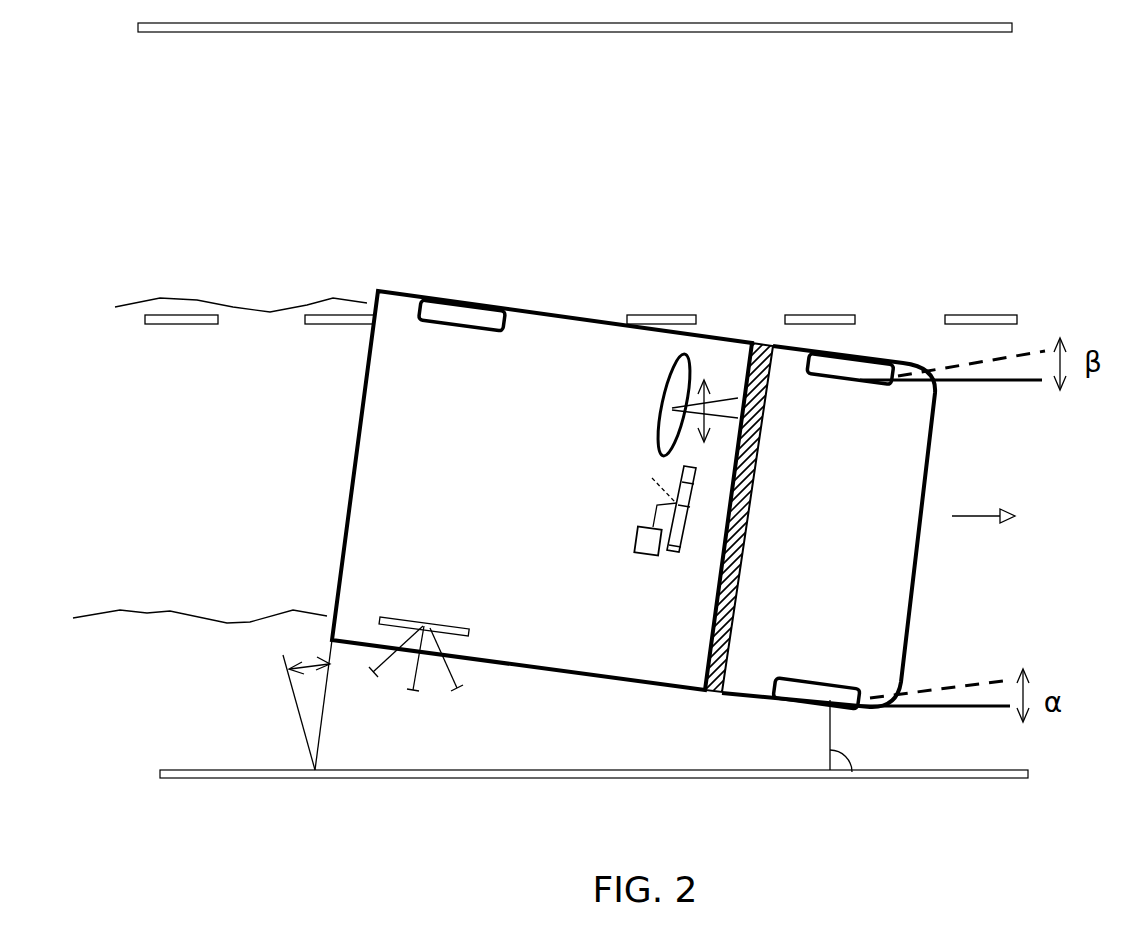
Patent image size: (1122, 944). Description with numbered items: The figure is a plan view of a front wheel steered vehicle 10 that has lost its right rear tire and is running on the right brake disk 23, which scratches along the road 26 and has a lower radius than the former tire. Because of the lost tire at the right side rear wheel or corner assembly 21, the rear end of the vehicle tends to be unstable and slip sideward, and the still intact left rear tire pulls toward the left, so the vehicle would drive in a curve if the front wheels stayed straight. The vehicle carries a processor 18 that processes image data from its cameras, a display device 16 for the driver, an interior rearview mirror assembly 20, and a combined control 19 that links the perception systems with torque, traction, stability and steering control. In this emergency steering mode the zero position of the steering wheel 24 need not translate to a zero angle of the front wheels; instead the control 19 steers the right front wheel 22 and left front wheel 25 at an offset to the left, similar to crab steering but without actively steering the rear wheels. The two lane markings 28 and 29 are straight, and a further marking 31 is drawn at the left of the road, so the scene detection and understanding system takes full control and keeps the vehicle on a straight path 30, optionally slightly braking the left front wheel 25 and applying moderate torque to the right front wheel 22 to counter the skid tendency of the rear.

The vehicle 10 is at (265, 440).
The display device 16 is at (685, 488).
The processor 18 is at (644, 481).
The combined control 19 is at (643, 542).
The interior rearview mirror assembly 20 is at (675, 540).
The right side rear wheel or corner assembly 21 is at (437, 622).
The right front wheel 22 is at (802, 697).
The right brake disk 23 is at (466, 312).
The steering wheel 24 is at (662, 383).
The left front wheel 25 is at (848, 365).
The road 26 is at (269, 705).
The lane marking 28 is at (897, 33).
The lane marking 29 is at (898, 778).
The straight path 30 is at (1010, 520).
The lane marking 31 is at (545, 460).